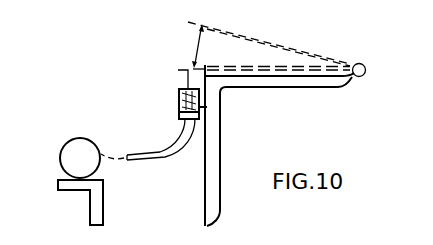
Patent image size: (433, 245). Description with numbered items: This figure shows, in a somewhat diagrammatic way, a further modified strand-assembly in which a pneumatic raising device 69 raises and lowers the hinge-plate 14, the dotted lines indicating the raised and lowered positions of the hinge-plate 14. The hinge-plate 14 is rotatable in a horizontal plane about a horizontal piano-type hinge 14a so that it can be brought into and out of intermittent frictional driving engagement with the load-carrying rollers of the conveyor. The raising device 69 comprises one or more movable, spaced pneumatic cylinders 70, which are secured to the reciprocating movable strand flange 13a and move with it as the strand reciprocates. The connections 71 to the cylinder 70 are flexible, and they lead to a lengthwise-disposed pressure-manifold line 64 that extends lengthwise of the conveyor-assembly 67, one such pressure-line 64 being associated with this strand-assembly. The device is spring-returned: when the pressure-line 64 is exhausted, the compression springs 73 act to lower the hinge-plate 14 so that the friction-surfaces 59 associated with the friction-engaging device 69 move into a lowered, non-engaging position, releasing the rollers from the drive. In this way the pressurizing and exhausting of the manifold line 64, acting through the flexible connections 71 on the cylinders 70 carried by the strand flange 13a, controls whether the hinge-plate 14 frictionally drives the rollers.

The hinge-plate 14 is at (275, 44).
The piano-type hinge 14a is at (365, 73).
The friction-surfaces 59 is at (311, 50).
The strand flange 13a is at (260, 148).
The compression springs 73 is at (207, 107).
The pneumatic raising device 69 is at (179, 98).
The pneumatic cylinders 70 is at (179, 112).
The connections 71 is at (163, 158).
The pressure-manifold line 64 is at (66, 145).
The conveyor-assembly 67 is at (80, 192).